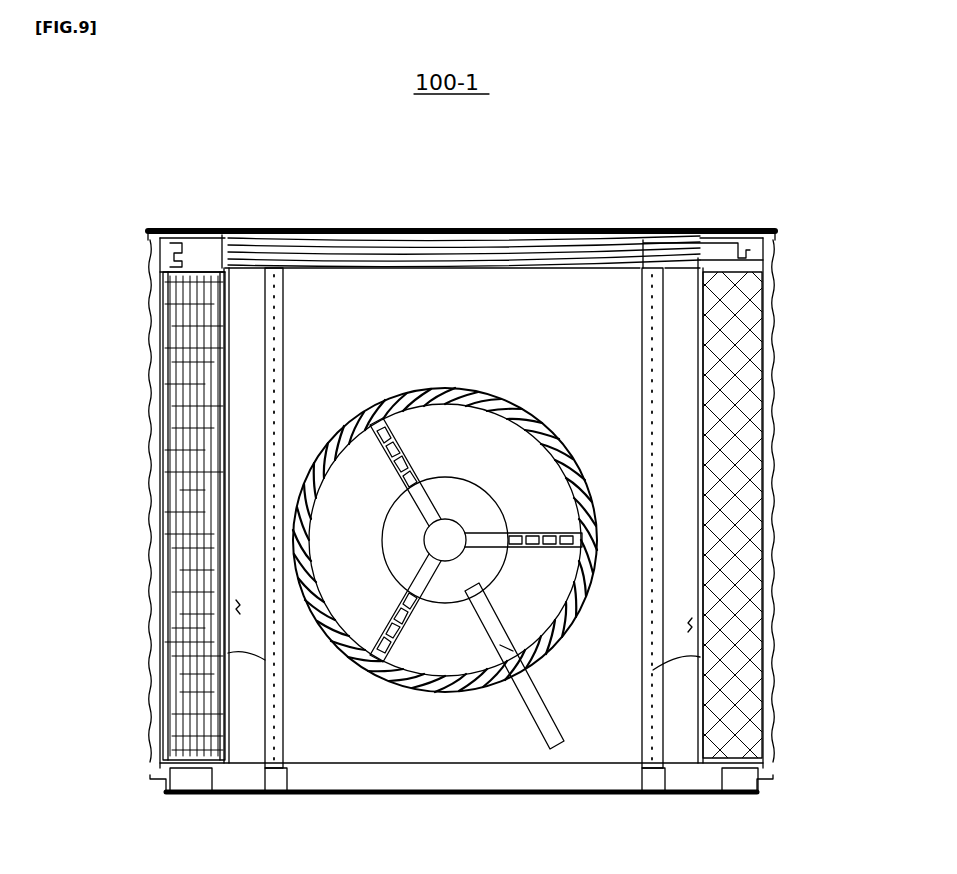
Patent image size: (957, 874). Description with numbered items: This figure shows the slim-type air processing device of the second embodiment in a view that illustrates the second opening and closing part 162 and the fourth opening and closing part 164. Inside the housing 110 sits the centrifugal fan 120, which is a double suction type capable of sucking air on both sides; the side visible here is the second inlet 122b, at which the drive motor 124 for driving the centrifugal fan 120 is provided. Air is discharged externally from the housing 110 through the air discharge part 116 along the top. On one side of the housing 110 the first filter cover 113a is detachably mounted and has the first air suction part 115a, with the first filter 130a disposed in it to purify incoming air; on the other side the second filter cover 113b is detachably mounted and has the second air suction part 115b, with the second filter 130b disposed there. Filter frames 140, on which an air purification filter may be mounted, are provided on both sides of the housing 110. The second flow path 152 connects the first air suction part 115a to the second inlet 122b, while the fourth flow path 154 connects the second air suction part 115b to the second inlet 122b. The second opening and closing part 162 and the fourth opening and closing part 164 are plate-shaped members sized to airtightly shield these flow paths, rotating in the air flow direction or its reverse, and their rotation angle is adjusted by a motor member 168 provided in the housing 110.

The housing 110 is at (775, 250).
The first filter cover 113a is at (775, 514).
The second filter cover 113b is at (152, 519).
The first air suction part 115a is at (775, 413).
The second air suction part 115b is at (152, 418).
The air discharge part 116 is at (318, 232).
The centrifugal fan 120 is at (410, 702).
The second inlet 122b is at (476, 459).
The drive motor 124 is at (457, 570).
The first filter 130a is at (766, 572).
The second filter 130b is at (155, 565).
The filter frame 140 is at (212, 796).
The second flow path 152 is at (706, 617).
The fourth flow path 154 is at (153, 611).
The second opening and closing part 162 is at (749, 668).
The fourth opening and closing part 164 is at (158, 666).
The motor member 168 is at (278, 796).